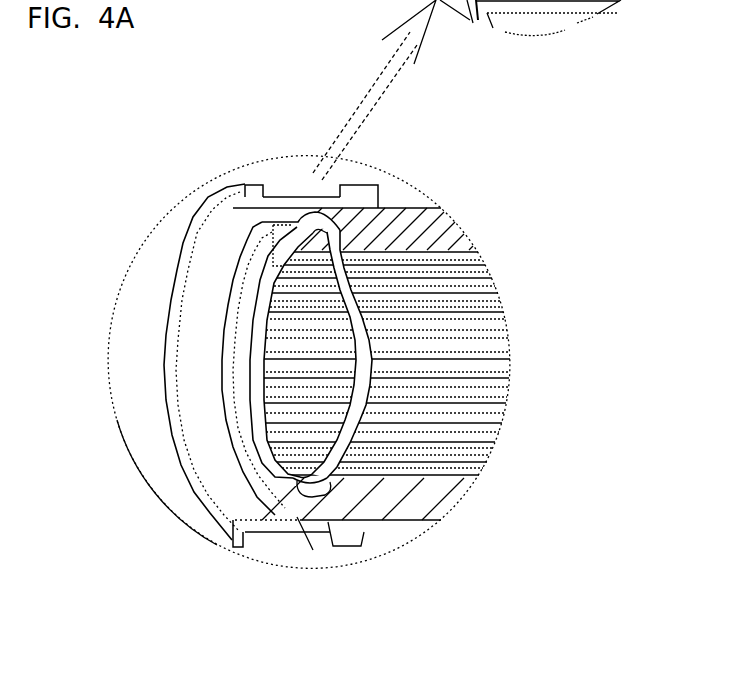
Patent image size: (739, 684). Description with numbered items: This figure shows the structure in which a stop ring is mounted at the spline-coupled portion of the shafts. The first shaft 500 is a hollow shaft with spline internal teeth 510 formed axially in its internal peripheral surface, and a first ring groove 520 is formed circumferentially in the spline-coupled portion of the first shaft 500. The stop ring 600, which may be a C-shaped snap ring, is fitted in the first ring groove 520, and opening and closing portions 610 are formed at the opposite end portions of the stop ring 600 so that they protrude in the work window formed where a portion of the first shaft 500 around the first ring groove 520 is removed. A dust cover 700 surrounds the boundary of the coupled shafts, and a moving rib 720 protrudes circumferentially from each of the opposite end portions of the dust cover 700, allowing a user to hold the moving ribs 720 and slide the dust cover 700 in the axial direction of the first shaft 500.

The first shaft 500 is at (395, 498).
The spline internal teeth 510 is at (493, 437).
The first ring groove 520 is at (328, 497).
The stop ring 600 is at (226, 450).
The opening and closing portion 610 is at (334, 222).
The dust cover 700 is at (197, 422).
The moving rib 720 is at (240, 186).